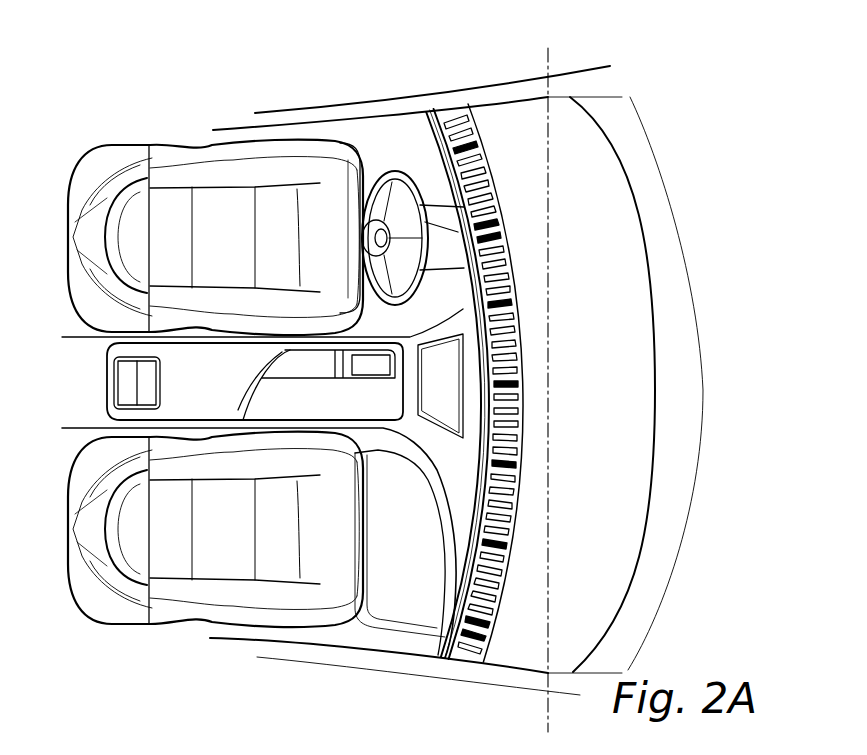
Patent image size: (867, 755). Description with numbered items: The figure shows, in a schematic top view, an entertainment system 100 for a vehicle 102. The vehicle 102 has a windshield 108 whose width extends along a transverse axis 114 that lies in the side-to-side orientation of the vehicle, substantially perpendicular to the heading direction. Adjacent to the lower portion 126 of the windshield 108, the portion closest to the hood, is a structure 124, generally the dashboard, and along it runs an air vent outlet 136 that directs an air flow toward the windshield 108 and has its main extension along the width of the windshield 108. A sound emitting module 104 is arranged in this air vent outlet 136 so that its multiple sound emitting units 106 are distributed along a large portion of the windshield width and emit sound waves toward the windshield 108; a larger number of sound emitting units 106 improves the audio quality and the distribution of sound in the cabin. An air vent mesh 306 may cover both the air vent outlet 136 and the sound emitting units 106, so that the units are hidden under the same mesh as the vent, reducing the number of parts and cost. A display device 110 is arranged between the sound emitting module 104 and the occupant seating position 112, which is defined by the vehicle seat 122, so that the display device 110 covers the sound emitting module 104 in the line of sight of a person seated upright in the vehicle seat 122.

The entertainment system 100 is at (420, 698).
The vehicle 102 is at (707, 608).
The sound emitting module 104 is at (545, 355).
The sound emitting units 106 is at (480, 147).
The windshield 108 is at (580, 180).
The display device 110 is at (477, 348).
The occupant seating position 112 is at (199, 185).
The axis 114 is at (548, 62).
The vehicle seat 122 is at (110, 238).
The structure 124 is at (438, 90).
The lower portion 126 is at (650, 332).
The air vent outlet 136 is at (503, 190).
The air vent mesh 306 is at (545, 372).